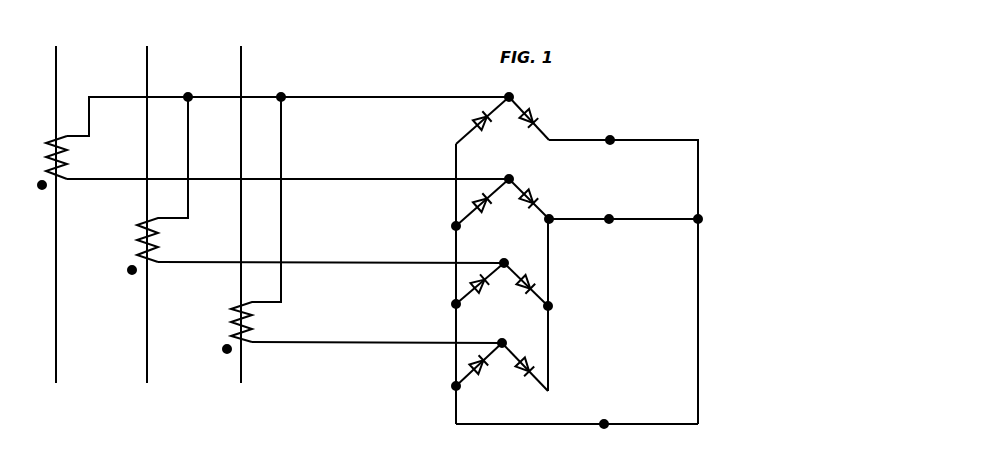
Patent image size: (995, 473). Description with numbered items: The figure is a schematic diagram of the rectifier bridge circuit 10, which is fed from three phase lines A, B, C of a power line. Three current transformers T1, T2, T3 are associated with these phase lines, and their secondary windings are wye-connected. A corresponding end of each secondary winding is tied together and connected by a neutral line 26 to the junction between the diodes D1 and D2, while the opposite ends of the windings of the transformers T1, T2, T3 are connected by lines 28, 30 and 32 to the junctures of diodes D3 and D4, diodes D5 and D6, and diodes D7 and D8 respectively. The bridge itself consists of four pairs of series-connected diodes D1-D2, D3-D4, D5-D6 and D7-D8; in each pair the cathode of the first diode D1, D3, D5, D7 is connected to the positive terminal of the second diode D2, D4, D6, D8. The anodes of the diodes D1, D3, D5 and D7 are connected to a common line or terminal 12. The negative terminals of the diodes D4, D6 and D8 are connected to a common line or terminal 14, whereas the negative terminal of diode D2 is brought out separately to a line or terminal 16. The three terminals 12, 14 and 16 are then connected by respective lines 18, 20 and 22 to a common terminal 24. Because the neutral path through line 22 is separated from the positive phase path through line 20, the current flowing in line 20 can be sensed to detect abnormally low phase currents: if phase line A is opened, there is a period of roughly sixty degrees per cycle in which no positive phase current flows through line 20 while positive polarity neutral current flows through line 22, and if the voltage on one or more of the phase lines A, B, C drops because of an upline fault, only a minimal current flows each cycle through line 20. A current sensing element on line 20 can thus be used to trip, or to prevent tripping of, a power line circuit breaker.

The rectifier circuit 10 is at (498, 464).
The common terminal 12 is at (610, 413).
The common terminal 14 is at (617, 209).
The terminal 16 is at (618, 129).
The line 18 is at (640, 424).
The line 20 is at (648, 219).
The line 22 is at (648, 140).
The common terminal 24 is at (710, 218).
The neutral line 26 is at (365, 97).
The line 28 is at (350, 179).
The line 30 is at (350, 263).
The line 32 is at (358, 343).
The current transformer T1 is at (70, 158).
The current transformer T2 is at (162, 244).
The current transformer T3 is at (256, 326).
The diode D1 is at (479, 120).
The diode D2 is at (543, 118).
The diode D3 is at (482, 207).
The diode D4 is at (541, 199).
The diode D5 is at (480, 290).
The diode D6 is at (526, 279).
The diode D7 is at (479, 373).
The diode D8 is at (525, 362).
The phase line A is at (56, 206).
The phase line B is at (147, 206).
The phase line C is at (240, 206).